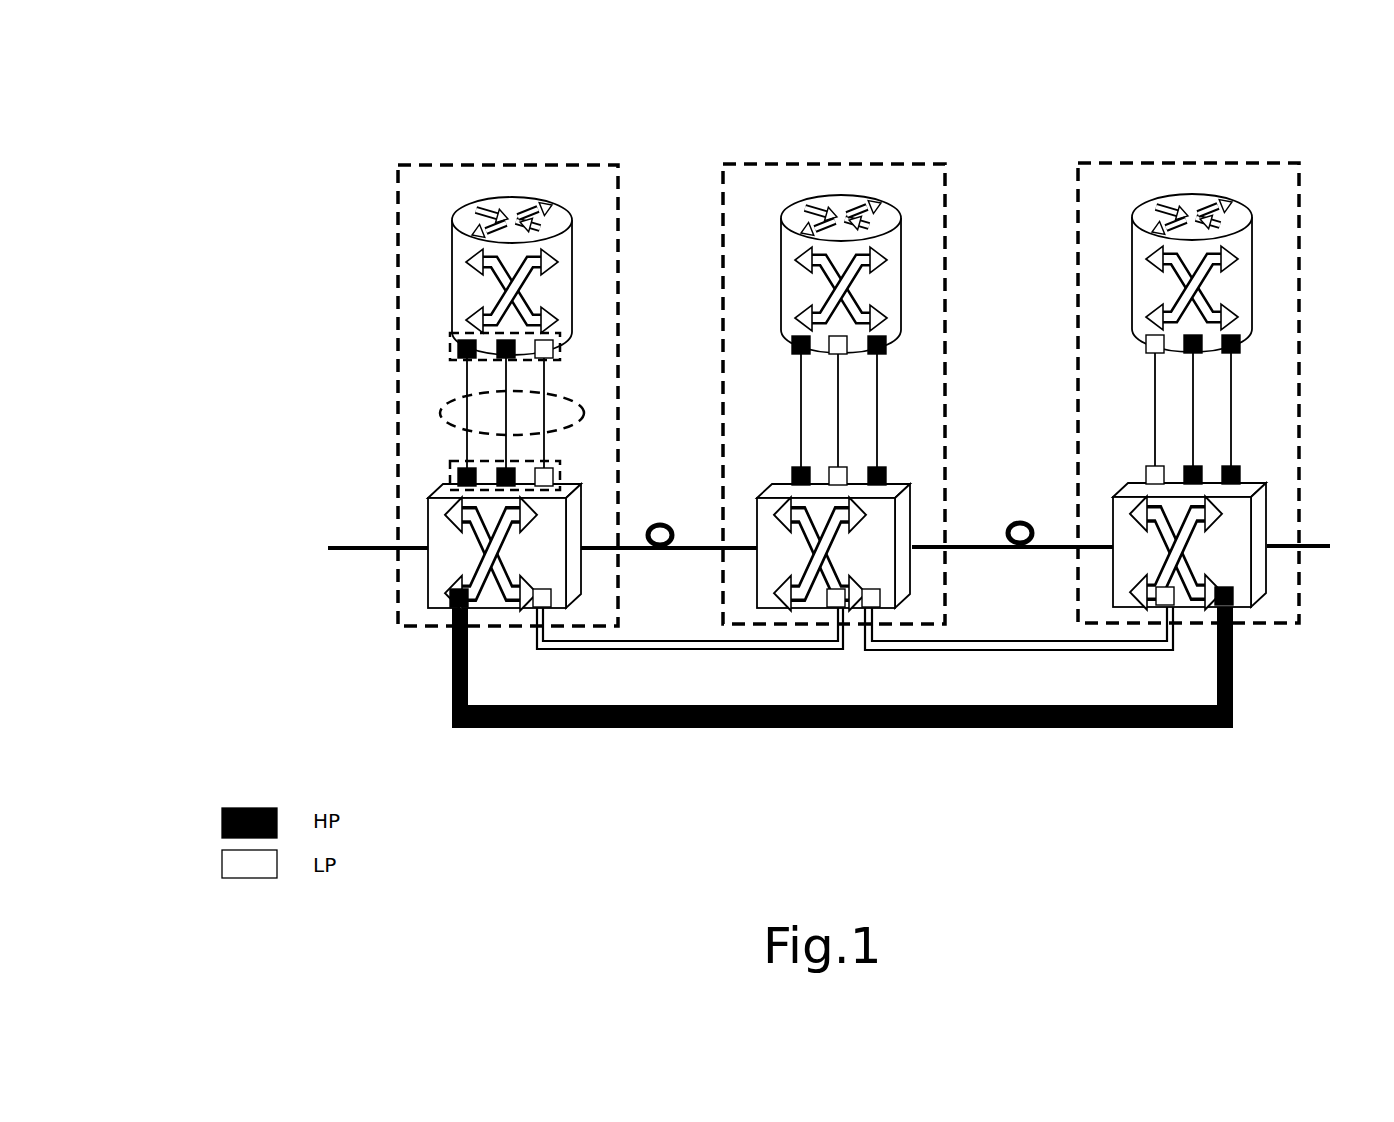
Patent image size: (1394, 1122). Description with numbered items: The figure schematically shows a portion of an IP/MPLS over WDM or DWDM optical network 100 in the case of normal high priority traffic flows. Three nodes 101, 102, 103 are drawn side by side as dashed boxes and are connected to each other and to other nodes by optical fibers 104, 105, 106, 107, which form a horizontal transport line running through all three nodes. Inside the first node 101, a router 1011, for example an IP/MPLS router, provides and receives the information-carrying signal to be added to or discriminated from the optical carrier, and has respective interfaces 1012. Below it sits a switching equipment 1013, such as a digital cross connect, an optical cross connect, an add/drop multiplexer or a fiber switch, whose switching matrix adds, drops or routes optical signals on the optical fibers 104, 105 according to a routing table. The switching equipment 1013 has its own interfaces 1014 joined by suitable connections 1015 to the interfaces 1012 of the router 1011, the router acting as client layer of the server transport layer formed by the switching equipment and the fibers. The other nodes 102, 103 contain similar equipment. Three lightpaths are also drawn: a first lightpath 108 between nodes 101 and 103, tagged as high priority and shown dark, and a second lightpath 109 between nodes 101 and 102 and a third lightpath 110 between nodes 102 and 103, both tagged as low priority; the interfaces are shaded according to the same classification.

The optical network 100 is at (180, 139).
The node 101 is at (485, 162).
The node 102 is at (793, 163).
The node 103 is at (1137, 163).
The router 1011 is at (452, 270).
The interfaces 1012 is at (447, 345).
The switching equipment 1013 is at (427, 582).
The interfaces 1014 is at (452, 472).
The connections 1015 is at (418, 413).
The optical fiber 104 is at (382, 552).
The optical fiber 105 is at (657, 548).
The optical fiber 106 is at (1020, 550).
The optical fiber 107 is at (1297, 550).
The first lightpath 108 is at (833, 720).
The second lightpath 109 is at (567, 647).
The third lightpath 110 is at (965, 648).